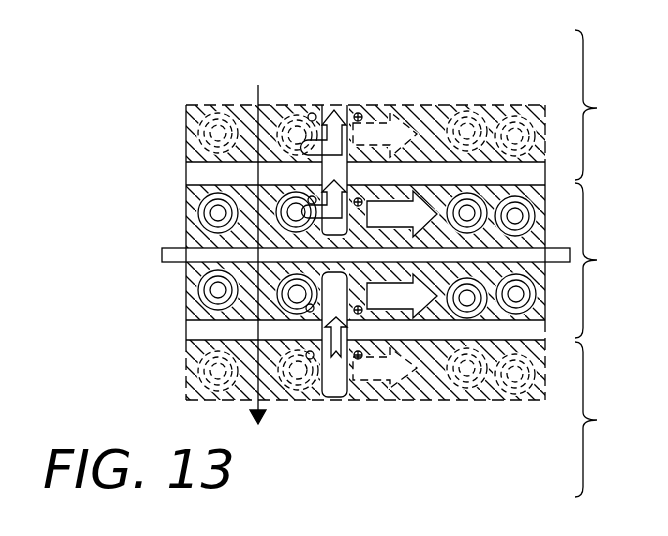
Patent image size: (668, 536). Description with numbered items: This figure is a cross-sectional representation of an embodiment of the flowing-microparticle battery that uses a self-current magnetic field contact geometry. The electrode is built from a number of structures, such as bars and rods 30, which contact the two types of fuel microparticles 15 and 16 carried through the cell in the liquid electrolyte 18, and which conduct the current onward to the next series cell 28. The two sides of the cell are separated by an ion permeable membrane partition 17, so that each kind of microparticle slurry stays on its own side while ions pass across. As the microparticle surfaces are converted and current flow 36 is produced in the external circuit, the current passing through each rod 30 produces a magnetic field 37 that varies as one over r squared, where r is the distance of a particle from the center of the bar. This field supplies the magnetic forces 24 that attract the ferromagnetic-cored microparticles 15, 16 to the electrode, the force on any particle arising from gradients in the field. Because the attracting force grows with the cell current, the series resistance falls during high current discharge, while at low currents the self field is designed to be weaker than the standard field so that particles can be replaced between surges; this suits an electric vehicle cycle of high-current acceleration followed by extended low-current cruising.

The fuel microparticles 15 is at (192, 210).
The fuel microparticles 16 is at (190, 325).
The ion permeable membrane partition 17 is at (165, 262).
The electrolyte liquid 18 is at (408, 375).
The magnetic forces 24 is at (258, 90).
The next series cell 28 is at (607, 263).
The bars and rods 30 is at (380, 107).
The current flow 36 is at (370, 218).
The magnetic field 37 is at (357, 112).